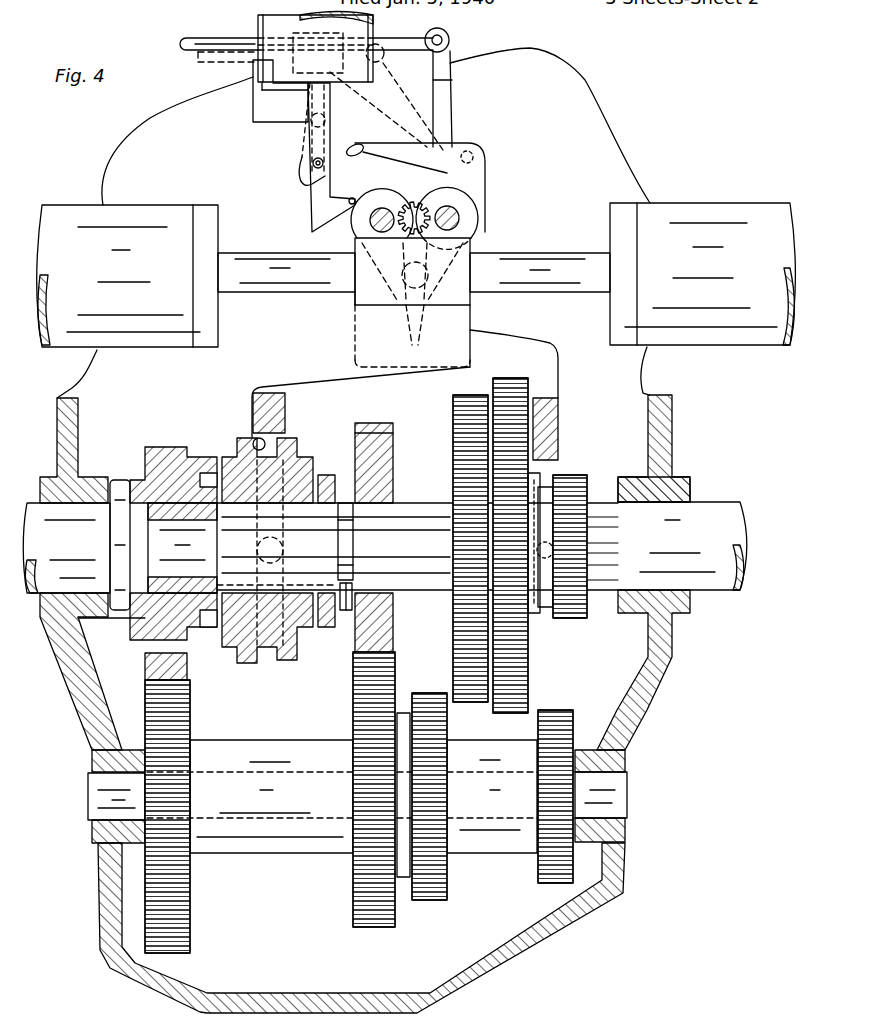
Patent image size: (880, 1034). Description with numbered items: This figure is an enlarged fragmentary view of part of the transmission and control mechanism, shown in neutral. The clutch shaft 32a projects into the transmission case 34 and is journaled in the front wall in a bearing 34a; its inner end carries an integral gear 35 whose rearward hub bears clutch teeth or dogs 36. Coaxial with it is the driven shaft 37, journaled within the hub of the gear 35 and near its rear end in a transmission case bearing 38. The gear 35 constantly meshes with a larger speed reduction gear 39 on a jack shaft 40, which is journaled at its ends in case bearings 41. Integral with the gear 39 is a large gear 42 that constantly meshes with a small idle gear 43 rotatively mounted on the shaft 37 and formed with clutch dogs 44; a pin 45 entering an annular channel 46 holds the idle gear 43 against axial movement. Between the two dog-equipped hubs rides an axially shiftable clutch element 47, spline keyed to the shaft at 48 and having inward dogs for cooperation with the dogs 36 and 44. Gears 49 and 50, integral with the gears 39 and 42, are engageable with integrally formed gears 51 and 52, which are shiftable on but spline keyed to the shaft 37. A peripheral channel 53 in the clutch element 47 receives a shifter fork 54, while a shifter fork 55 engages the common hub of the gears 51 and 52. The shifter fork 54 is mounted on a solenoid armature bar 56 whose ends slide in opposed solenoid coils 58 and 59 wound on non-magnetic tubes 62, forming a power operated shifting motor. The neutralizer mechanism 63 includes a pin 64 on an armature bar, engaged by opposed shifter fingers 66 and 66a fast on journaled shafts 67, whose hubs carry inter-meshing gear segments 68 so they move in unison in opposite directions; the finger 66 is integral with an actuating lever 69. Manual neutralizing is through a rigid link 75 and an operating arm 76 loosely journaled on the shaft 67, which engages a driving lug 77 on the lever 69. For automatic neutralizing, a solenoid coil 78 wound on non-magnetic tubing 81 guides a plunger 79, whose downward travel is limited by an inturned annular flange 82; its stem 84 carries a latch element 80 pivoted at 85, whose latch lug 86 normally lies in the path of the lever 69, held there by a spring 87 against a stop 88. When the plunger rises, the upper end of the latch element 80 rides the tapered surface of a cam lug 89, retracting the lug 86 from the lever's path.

The clutch shaft 32a is at (66, 548).
The transmission case 34 is at (667, 682).
The bearing 34a is at (73, 498).
The gear 35 is at (163, 446).
The clutch teeth or dogs 36 is at (207, 473).
The driven shaft 37 is at (447, 547).
The transmission case bearing 38 is at (675, 490).
The speed reduction gear 39 is at (191, 910).
The jack shaft 40 is at (97, 805).
The case bearings 41 is at (92, 762).
The gear 42 is at (355, 883).
The idle gear 43 is at (393, 480).
The clutch teeth or dogs 44 is at (334, 473).
The pin 45 is at (343, 612).
The annular channel 46 is at (352, 546).
The clutch element 47 is at (299, 449).
The spline key 48 is at (250, 587).
The gear 49 is at (432, 888).
The gear 50 is at (541, 878).
The gear 51 is at (460, 648).
The gear 52 is at (520, 649).
The peripheral channel 53 is at (254, 440).
The shifter fork 54 is at (283, 412).
The shifter fork 55 is at (547, 437).
The solenoid armature bar 56 is at (273, 292).
The solenoid coil 58 is at (702, 274).
The solenoid coil 59 is at (127, 276).
The non-magnetic tube 62 is at (785, 305).
The neutralizer mechanism 63 is at (492, 170).
The pin 64 is at (416, 330).
The shifter finger 66 is at (472, 303).
The shifter finger 66a is at (356, 302).
The journaled shaft 67 is at (378, 221).
The gear segments 68 is at (404, 200).
The actuating lever 69 is at (480, 160).
The rigid link 75 is at (193, 43).
The operating arm 76 is at (452, 82).
The driving pin or lug 77 is at (472, 151).
The solenoid coil 78 is at (283, 43).
The plunger 79 is at (270, 20).
The latch element 80 is at (308, 202).
The non-magnetic tubing 81 is at (333, 22).
The inturned annular flange 82 is at (333, 75).
The stem 84 is at (327, 142).
The pivot 85 is at (312, 167).
The latch lug 86 is at (353, 199).
The spring 87 is at (320, 160).
The stop 88 is at (361, 150).
The cam lug 89 is at (282, 110).